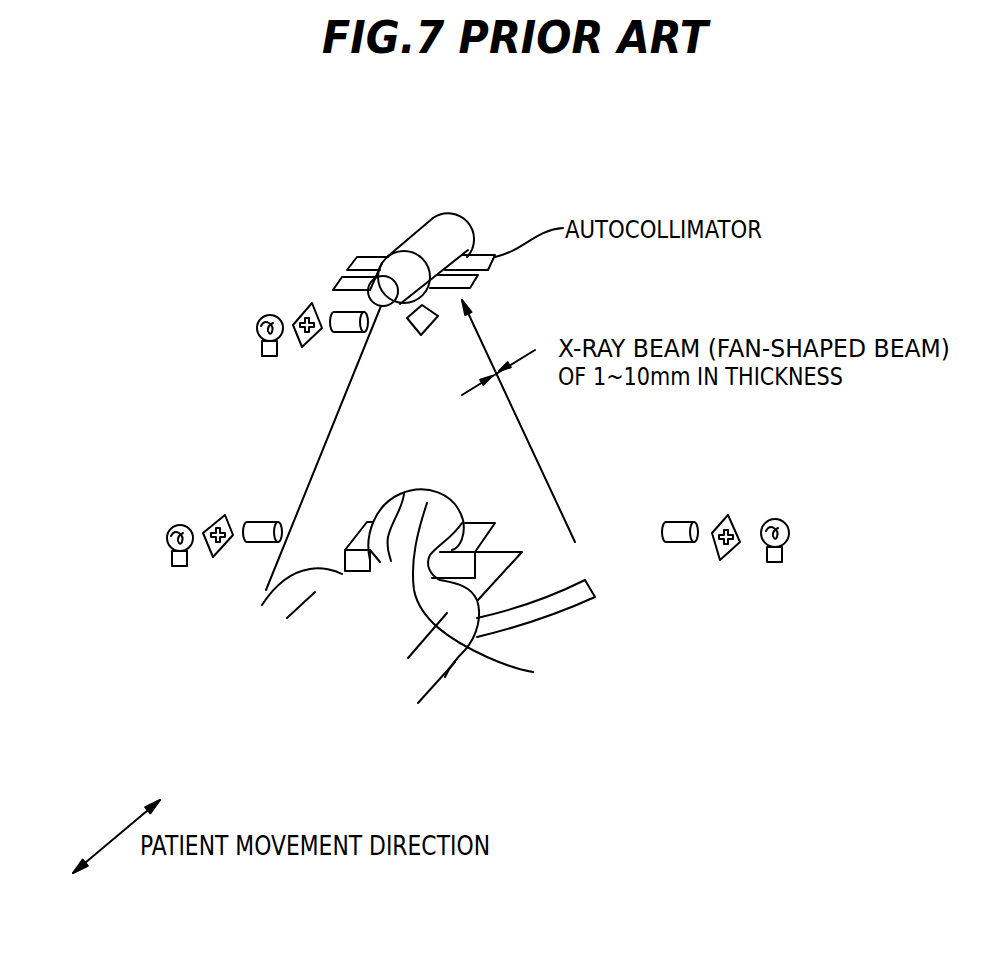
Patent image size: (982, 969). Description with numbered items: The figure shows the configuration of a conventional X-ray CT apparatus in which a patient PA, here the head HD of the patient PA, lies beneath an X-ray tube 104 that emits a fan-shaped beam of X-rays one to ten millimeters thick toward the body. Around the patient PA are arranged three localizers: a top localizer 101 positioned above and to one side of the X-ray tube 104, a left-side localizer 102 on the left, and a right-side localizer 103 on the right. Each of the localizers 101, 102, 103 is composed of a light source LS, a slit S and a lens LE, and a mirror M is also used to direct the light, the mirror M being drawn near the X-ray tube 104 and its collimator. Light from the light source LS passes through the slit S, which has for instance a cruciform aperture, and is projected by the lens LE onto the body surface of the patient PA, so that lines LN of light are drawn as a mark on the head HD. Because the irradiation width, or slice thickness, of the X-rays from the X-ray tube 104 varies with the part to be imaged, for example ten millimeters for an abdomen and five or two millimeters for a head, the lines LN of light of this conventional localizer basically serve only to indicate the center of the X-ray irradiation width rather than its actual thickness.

The top localizer 101 is at (246, 330).
The left-side localizer 102 is at (153, 537).
The right-side localizer 103 is at (725, 498).
The X-ray tube 104 is at (463, 217).
The mirror M is at (436, 325).
The light source LS is at (262, 320).
The slit S is at (300, 317).
The lens LE is at (333, 312).
The head HD is at (440, 488).
The lines of light LN is at (533, 672).
The patient PA is at (445, 677).